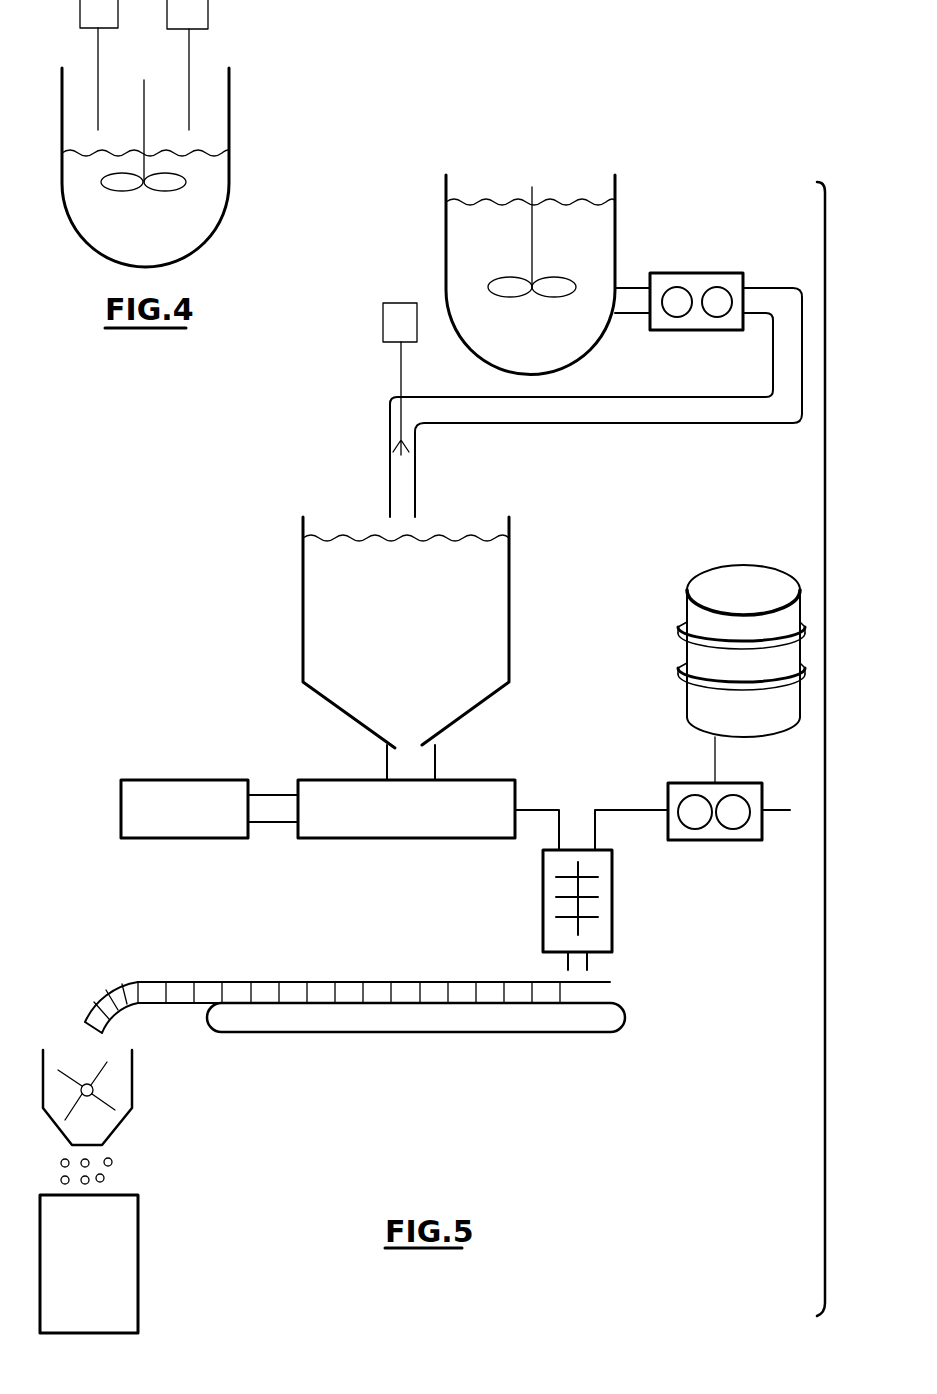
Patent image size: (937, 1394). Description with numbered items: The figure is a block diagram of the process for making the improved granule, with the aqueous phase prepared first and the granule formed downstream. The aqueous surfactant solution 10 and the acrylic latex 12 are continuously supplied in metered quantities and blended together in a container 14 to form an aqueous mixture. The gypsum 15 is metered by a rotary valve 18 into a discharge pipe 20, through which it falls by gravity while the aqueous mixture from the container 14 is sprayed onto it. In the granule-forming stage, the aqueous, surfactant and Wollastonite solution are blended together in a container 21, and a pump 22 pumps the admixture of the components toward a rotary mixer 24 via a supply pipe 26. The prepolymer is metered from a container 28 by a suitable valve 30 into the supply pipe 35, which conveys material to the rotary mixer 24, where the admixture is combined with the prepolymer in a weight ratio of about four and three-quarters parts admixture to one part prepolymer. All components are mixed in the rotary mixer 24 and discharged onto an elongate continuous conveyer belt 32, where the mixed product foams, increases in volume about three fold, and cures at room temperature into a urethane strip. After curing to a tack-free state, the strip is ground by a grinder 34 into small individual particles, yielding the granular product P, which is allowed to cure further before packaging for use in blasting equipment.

In FIG. 4, the aqueous surfactant solution 10 is at (99, 65).
In FIG. 4, the acrylic latex 12 is at (187, 65).
In FIG. 4, the container 14 is at (97, 226).
In FIG. 5, the container 14 is at (400, 379).
In FIG. 5, the gypsum 15 is at (616, 228).
In FIG. 5, the rotary valve 18 is at (700, 273).
In FIG. 5, the discharge pipe 20 is at (545, 425).
In FIG. 5, the container 21 is at (303, 590).
In FIG. 5, the pump 22 is at (157, 780).
In FIG. 5, the rotary mixer 24 is at (612, 902).
In FIG. 5, the supply pipe 26 is at (530, 810).
In FIG. 5, the container 28 is at (758, 737).
In FIG. 5, the valve 30 is at (744, 788).
In FIG. 5, the conveyer belt 32 is at (625, 1017).
In FIG. 5, the grinder 34 is at (134, 1098).
In FIG. 5, the supply pipe 35 is at (650, 808).
In FIG. 5, the product P is at (113, 1160).